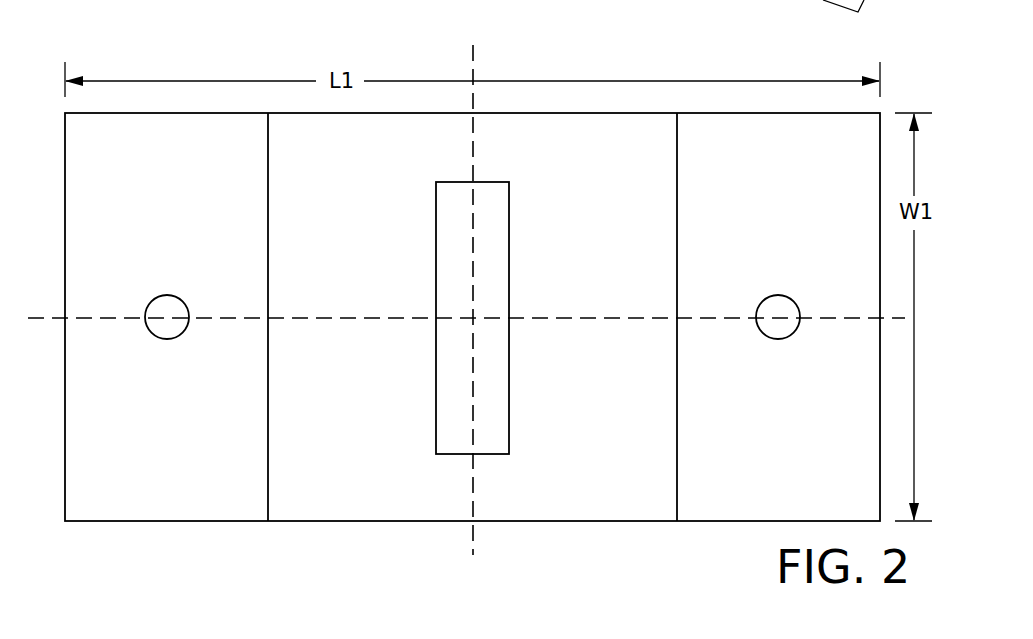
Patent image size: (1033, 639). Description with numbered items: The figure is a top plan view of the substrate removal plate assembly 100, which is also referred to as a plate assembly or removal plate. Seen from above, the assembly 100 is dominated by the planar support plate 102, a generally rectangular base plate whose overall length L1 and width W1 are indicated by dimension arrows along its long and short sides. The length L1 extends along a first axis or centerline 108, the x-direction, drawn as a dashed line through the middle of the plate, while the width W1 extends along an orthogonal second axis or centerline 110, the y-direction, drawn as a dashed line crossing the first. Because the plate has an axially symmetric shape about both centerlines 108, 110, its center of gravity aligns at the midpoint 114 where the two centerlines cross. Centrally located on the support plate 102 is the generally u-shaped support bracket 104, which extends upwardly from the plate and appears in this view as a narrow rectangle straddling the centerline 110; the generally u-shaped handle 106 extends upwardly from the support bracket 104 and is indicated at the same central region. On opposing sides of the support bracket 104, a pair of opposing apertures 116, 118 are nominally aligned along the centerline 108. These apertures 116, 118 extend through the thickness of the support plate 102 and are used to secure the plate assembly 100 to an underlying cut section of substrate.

The substrate removal plate assembly 100 is at (136, 44).
The support plate 102 is at (149, 503).
The support bracket 104 is at (617, 495).
The handle 106 is at (497, 249).
The first centerline 108 is at (354, 318).
The second centerline 110 is at (475, 548).
The midpoint 114 is at (464, 326).
The first aperture 116 is at (166, 295).
The second aperture 118 is at (778, 295).